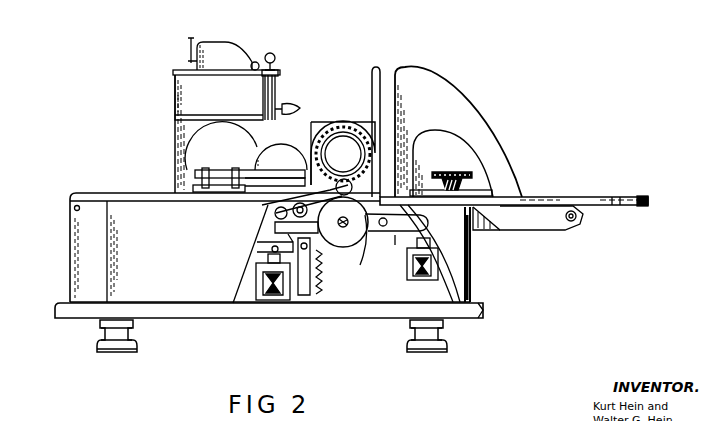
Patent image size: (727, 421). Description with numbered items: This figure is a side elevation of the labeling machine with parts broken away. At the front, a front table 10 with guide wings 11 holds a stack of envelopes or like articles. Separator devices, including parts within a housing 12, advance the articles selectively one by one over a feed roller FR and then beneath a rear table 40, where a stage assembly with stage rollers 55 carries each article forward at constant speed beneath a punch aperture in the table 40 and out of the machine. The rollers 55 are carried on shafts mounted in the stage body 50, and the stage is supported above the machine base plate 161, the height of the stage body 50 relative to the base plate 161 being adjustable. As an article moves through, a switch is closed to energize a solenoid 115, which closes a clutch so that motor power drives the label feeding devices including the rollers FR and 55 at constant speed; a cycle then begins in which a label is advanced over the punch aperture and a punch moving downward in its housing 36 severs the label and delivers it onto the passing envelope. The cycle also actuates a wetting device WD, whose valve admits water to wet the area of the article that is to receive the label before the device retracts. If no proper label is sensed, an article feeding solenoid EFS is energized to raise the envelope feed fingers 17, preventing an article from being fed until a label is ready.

The front table 10 is at (633, 200).
The guide wings 11 is at (463, 97).
The housing 12 is at (331, 120).
The envelope feed fingers 17 is at (397, 236).
The punch housing 36 is at (186, 141).
The rear table 40 is at (150, 191).
The stage body 50 is at (290, 227).
The stage rollers 55 is at (300, 218).
The solenoid 115 is at (260, 290).
The machine base plate 161 is at (481, 311).
The wetting device WD is at (278, 84).
The feed roller FR is at (343, 239).
The article feeding solenoid EFS is at (417, 282).